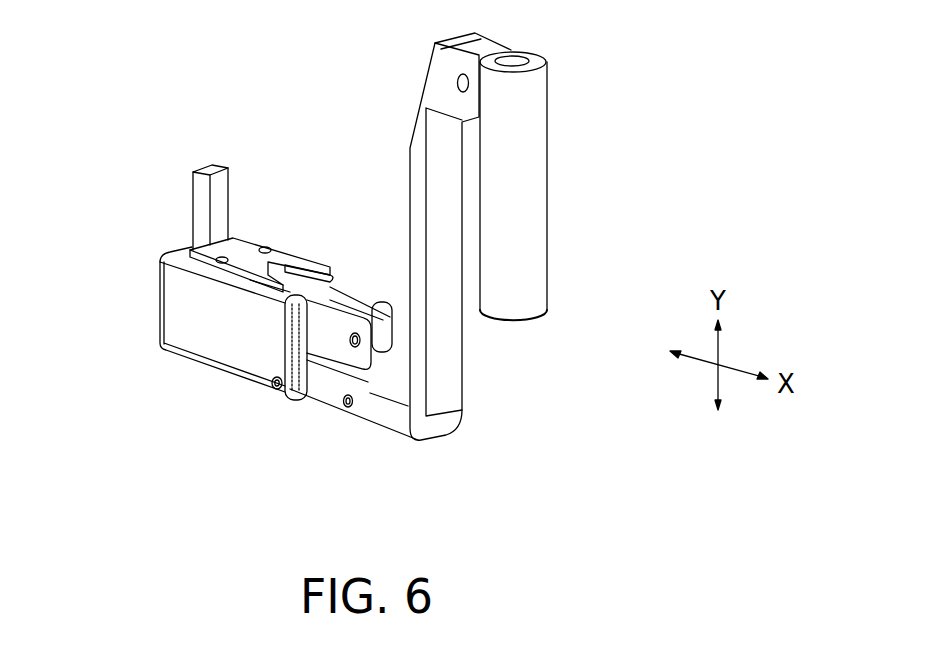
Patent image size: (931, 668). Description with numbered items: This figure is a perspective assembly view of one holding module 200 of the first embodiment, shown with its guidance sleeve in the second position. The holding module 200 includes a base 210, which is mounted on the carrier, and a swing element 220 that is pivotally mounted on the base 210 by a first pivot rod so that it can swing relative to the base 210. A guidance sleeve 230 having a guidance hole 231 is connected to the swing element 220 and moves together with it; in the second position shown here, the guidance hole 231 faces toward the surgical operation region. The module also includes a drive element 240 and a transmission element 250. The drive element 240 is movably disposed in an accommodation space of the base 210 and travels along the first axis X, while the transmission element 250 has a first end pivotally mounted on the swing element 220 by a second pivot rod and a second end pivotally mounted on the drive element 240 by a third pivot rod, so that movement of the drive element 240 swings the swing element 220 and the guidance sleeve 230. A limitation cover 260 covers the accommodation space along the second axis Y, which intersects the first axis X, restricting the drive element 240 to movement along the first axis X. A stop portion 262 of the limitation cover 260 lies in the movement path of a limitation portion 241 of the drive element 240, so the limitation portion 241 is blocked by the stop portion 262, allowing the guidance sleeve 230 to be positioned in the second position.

The holding module 200 is at (251, 101).
The base 210 is at (195, 316).
The swing element 220 is at (448, 358).
The guidance sleeve 230 is at (527, 185).
The guidance hole 231 is at (518, 58).
The drive element 240 is at (324, 345).
The limitation portion 241 is at (198, 195).
The transmission element 250 is at (357, 372).
The limitation cover 260 is at (253, 260).
The stop portion 262 is at (190, 262).